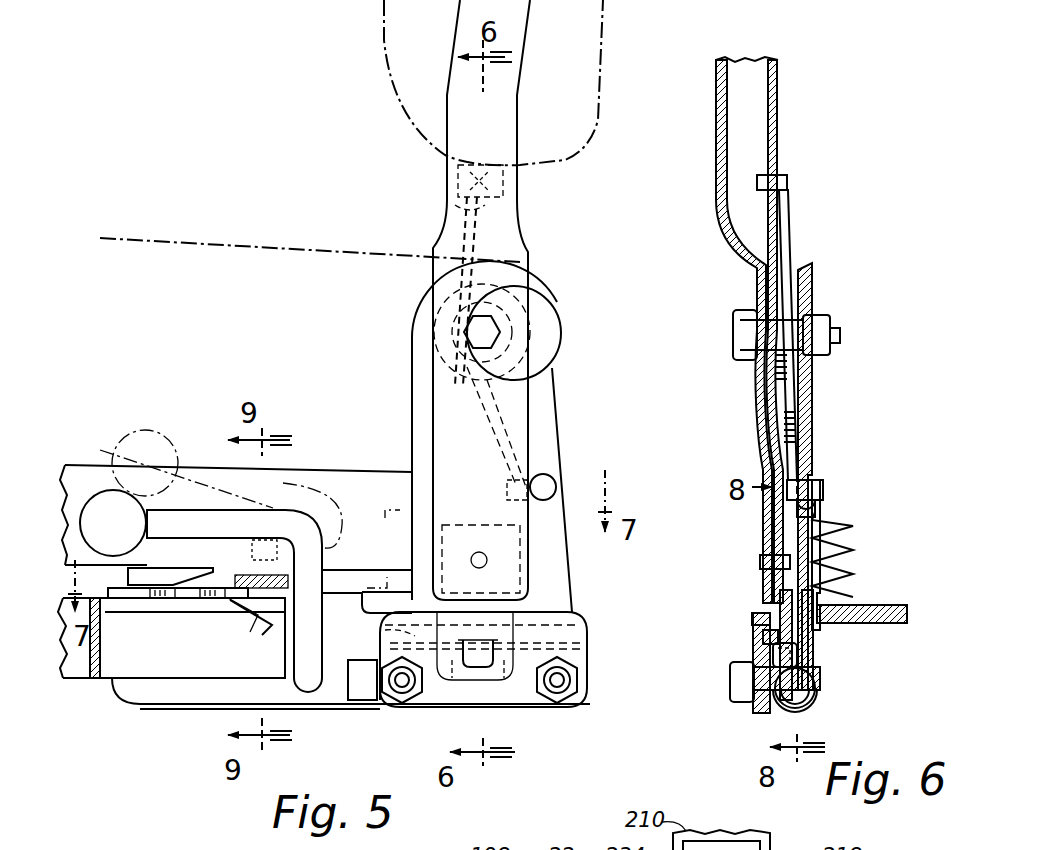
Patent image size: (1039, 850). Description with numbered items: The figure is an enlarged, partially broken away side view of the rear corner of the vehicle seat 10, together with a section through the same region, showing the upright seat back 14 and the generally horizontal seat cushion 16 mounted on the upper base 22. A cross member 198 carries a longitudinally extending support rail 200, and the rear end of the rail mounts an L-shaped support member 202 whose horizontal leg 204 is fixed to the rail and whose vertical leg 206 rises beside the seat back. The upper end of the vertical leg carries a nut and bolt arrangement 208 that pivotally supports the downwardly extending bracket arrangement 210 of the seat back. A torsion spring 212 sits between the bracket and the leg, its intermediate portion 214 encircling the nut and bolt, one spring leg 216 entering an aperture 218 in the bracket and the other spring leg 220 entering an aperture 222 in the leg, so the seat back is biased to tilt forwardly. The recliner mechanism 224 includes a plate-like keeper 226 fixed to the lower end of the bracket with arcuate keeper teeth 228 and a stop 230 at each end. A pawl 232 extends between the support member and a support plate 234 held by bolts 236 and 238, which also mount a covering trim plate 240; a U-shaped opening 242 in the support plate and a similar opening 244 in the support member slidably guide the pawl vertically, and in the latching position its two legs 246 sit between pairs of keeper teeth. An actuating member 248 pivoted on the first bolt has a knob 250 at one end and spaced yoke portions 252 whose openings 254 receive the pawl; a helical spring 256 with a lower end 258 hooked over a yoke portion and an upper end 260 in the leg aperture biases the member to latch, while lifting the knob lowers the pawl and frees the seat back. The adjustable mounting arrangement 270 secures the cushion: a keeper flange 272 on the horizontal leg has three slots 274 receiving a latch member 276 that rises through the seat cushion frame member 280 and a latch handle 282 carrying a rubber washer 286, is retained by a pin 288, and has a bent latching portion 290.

In FIG. 5, the vehicle seat 10 is at (318, 178).
In FIG. 5, the seat back 14 is at (383, 59).
In FIG. 5, the seat cushion 16 is at (218, 243).
In FIG. 5, the upper base 22 is at (63, 686).
In FIG. 6, the upper base 22 is at (877, 630).
In FIG. 6, the cross member 198 is at (862, 608).
In FIG. 5, the support rail 200 is at (390, 600).
In FIG. 6, the support rail 200 is at (846, 604).
In FIG. 5, the support member 202 is at (575, 619).
In FIG. 6, the support member 202 is at (803, 655).
In FIG. 5, the horizontal leg 204 is at (150, 696).
In FIG. 5, the vertical leg 206 is at (556, 380).
In FIG. 6, the vertical leg 206 is at (813, 386).
In FIG. 5, the nut and bolt arrangement 208 is at (463, 333).
In FIG. 6, the nut and bolt arrangement 208 is at (770, 340).
In FIG. 5, the bracket arrangement 210 is at (518, 252).
In FIG. 6, the bracket arrangement 210 is at (757, 284).
In FIG. 5, the torsion spring 212 is at (566, 333).
In FIG. 6, the torsion spring 212 is at (792, 225).
In FIG. 5, the intermediate portion 214 is at (551, 311).
In FIG. 6, the intermediate portion 214 is at (803, 292).
In FIG. 5, the spring leg 216 is at (486, 207).
In FIG. 6, the spring leg 216 is at (788, 182).
In FIG. 5, the aperture 218 is at (503, 182).
In FIG. 6, the aperture 218 is at (776, 168).
In FIG. 5, the spring leg 220 is at (508, 493).
In FIG. 6, the spring leg 220 is at (824, 481).
In FIG. 5, the aperture 222 is at (548, 476).
In FIG. 6, the aperture 222 is at (806, 470).
In FIG. 5, the recliner mechanism 224 is at (590, 686).
In FIG. 6, the recliner mechanism 224 is at (750, 600).
In FIG. 5, the keeper 226 is at (552, 600).
In FIG. 6, the keeper 226 is at (768, 534).
In FIG. 5, the keeper teeth 228 is at (400, 644).
In FIG. 5, the stop 230 is at (385, 630).
In FIG. 5, the pawl 232 is at (480, 672).
In FIG. 6, the pawl 232 is at (770, 660).
In FIG. 5, the support plate 234 is at (509, 616).
In FIG. 6, the support plate 234 is at (758, 638).
In FIG. 5, the bolt 236 is at (380, 712).
In FIG. 6, the bolt 236 is at (758, 673).
In FIG. 5, the bolt 238 is at (561, 700).
In FIG. 5, the trim plate 240 is at (533, 700).
In FIG. 6, the trim plate 240 is at (756, 619).
In FIG. 5, the opening 242 is at (472, 668).
In FIG. 6, the opening 242 is at (775, 700).
In FIG. 6, the opening 244 is at (814, 694).
In FIG. 5, the pawl legs 246 is at (492, 640).
In FIG. 6, the pawl legs 246 is at (797, 648).
In FIG. 5, the actuating member 248 is at (273, 507).
In FIG. 6, the actuating member 248 is at (778, 706).
In FIG. 5, the knob 250 is at (112, 456).
In FIG. 5, the yoke portions 252 is at (400, 706).
In FIG. 6, the yoke portions 252 is at (770, 708).
In FIG. 5, the openings 254 is at (497, 676).
In FIG. 6, the openings 254 is at (805, 668).
In FIG. 6, the helical spring 256 is at (854, 533).
In FIG. 6, the lower end 258 is at (803, 714).
In FIG. 6, the upper end 260 is at (824, 500).
In FIG. 5, the adjustable mounting arrangement 270 is at (199, 556).
In FIG. 5, the keeper flange 272 is at (122, 598).
In FIG. 5, the slots 274 is at (168, 598).
In FIG. 5, the latch member 276 is at (272, 626).
In FIG. 5, the seat cushion frame member 280 is at (383, 468).
In FIG. 5, the latch handle 282 is at (170, 574).
In FIG. 5, the rubber washer 286 is at (292, 577).
In FIG. 5, the pin 288 is at (221, 499).
In FIG. 5, the latching portion 290 is at (232, 618).